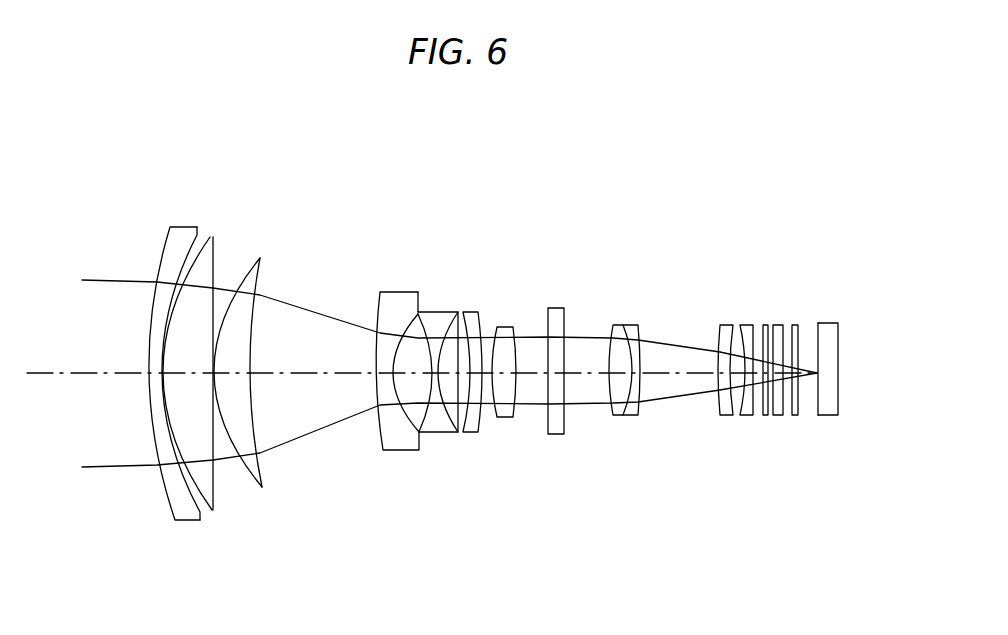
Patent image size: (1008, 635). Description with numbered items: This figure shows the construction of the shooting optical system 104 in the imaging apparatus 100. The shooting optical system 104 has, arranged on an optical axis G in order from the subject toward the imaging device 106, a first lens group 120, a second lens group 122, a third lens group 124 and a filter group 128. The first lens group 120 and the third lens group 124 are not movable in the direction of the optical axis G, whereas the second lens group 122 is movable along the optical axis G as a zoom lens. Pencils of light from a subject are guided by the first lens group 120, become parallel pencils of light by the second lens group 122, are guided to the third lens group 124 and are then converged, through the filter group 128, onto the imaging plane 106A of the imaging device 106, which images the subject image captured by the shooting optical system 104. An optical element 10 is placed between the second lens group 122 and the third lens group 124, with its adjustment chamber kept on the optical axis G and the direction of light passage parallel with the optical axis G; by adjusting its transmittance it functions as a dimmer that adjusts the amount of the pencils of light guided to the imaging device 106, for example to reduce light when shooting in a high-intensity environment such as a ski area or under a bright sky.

The imaging apparatus 100 is at (705, 202).
The optical axis G is at (35, 374).
The shooting optical system 104 is at (117, 251).
The first lens group 120 is at (142, 532).
The second lens group 122 is at (378, 463).
The optical element 10 is at (555, 308).
The third lens group 124 is at (632, 415).
The filter group 128 is at (776, 434).
The imaging device 106 is at (828, 415).
The imaging plane 106A is at (818, 349).